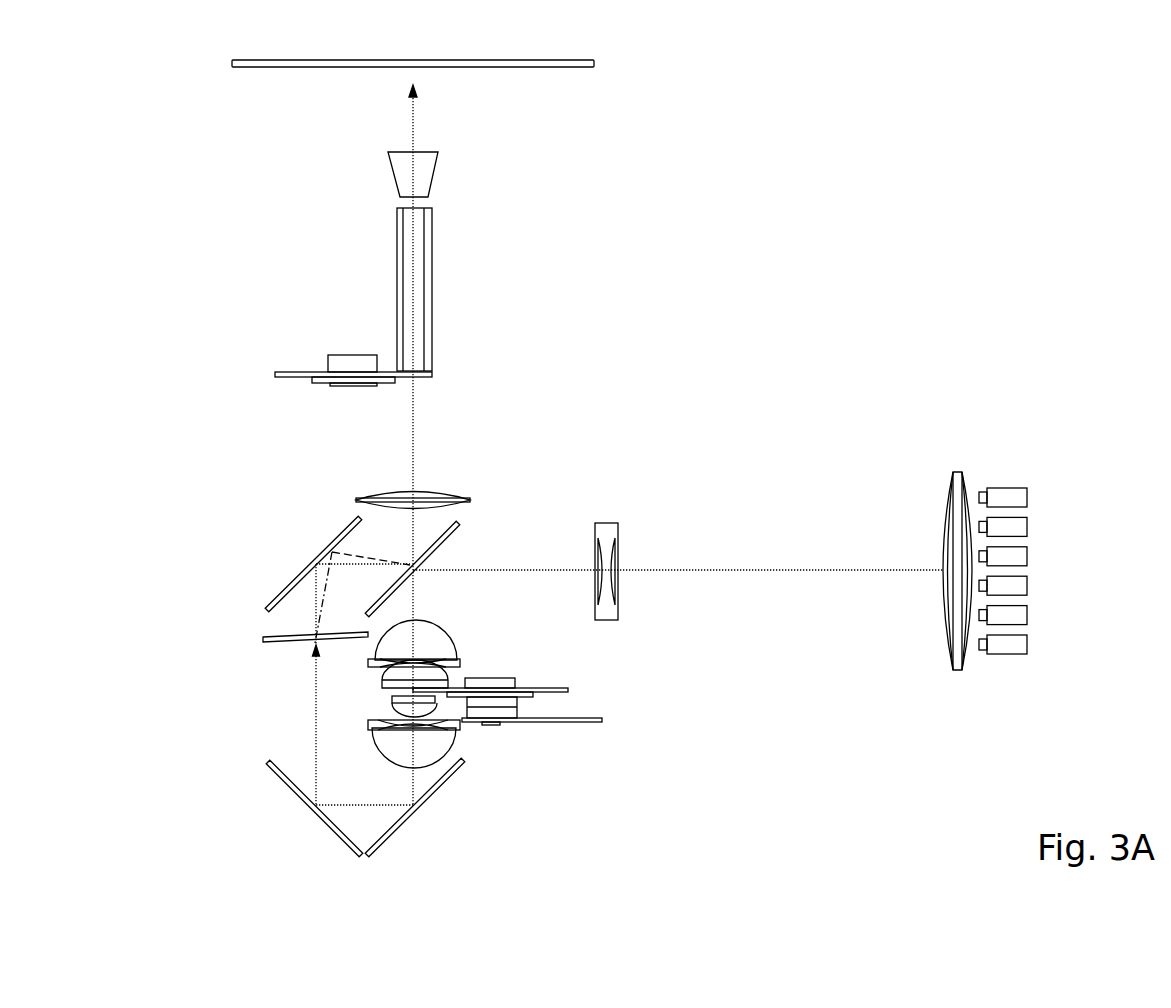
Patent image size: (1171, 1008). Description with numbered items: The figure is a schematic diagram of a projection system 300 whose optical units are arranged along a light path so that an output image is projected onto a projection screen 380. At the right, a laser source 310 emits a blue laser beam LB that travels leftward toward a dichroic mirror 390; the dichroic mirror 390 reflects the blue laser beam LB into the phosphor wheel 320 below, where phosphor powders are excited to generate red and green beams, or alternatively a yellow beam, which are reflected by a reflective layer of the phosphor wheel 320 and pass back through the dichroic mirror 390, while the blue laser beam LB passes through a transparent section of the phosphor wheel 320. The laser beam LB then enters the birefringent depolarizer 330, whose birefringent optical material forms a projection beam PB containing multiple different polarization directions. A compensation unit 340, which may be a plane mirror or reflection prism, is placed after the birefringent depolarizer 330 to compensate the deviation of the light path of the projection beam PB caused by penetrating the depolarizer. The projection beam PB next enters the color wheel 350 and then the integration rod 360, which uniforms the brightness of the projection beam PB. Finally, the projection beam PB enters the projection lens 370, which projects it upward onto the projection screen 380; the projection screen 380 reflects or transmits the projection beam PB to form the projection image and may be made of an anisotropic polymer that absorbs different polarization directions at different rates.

The projection system 300 is at (1043, 101).
The laser source 310 is at (1009, 648).
The phosphor wheel 320 is at (552, 723).
The birefringent depolarizer 330 is at (273, 642).
The compensation unit 340 is at (297, 580).
The color wheel 350 is at (276, 375).
The integration rod 360 is at (425, 270).
The projection lens 370 is at (423, 173).
The projection screen 380 is at (595, 63).
The dichroic mirror 390 is at (442, 545).
The projection beam PB is at (413, 445).
The laser beam LB is at (723, 568).